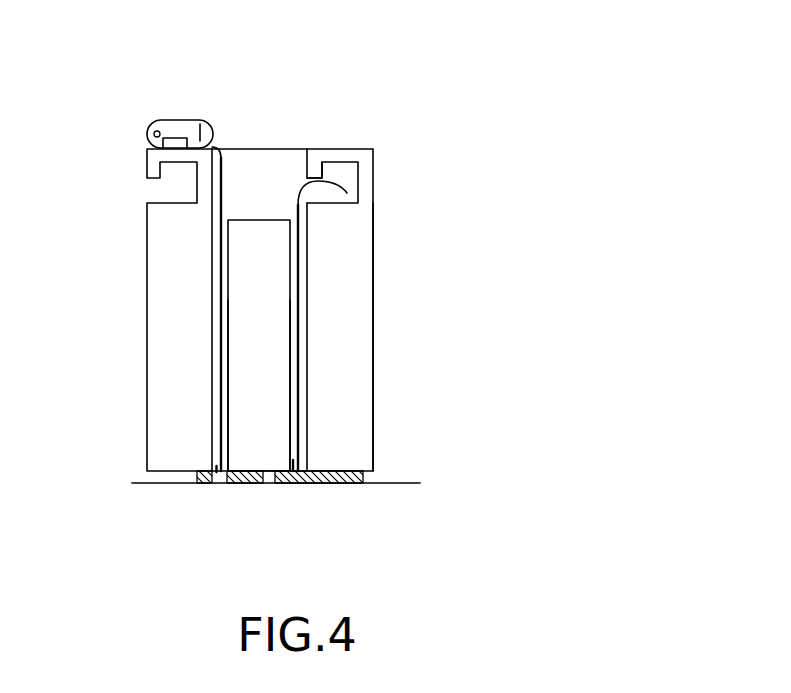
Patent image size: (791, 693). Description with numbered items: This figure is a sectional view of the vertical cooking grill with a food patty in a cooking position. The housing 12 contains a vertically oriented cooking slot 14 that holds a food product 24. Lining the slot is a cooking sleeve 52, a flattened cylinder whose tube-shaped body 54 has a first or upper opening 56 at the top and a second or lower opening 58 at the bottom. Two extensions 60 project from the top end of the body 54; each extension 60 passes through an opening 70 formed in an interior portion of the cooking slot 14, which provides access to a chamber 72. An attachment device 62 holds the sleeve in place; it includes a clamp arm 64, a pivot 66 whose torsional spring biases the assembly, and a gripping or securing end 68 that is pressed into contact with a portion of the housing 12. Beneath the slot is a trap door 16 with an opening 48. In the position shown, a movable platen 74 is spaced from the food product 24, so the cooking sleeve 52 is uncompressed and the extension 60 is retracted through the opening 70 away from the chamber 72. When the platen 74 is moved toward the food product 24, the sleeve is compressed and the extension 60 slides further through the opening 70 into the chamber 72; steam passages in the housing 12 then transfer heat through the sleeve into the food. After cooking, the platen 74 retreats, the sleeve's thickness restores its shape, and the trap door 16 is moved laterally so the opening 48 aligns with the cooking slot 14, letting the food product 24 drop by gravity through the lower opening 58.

The housing 12 is at (147, 160).
The cooking slot 14 is at (293, 471).
The trap door 16 is at (330, 483).
The food product 24 is at (272, 442).
The opening 48 is at (148, 483).
The cooking sleeve 52 is at (310, 238).
The body 54 is at (218, 365).
The first or upper opening 56 is at (260, 184).
The second or lower opening 58 is at (218, 490).
The extension 60 is at (325, 183).
The attachment device 62 is at (148, 111).
The clamp arm 64 is at (160, 120).
The pivot 66 is at (148, 135).
The gripping or securing end 68 is at (198, 124).
The opening 70 is at (322, 180).
The chamber 72 is at (343, 175).
The movable platen 74 is at (347, 337).